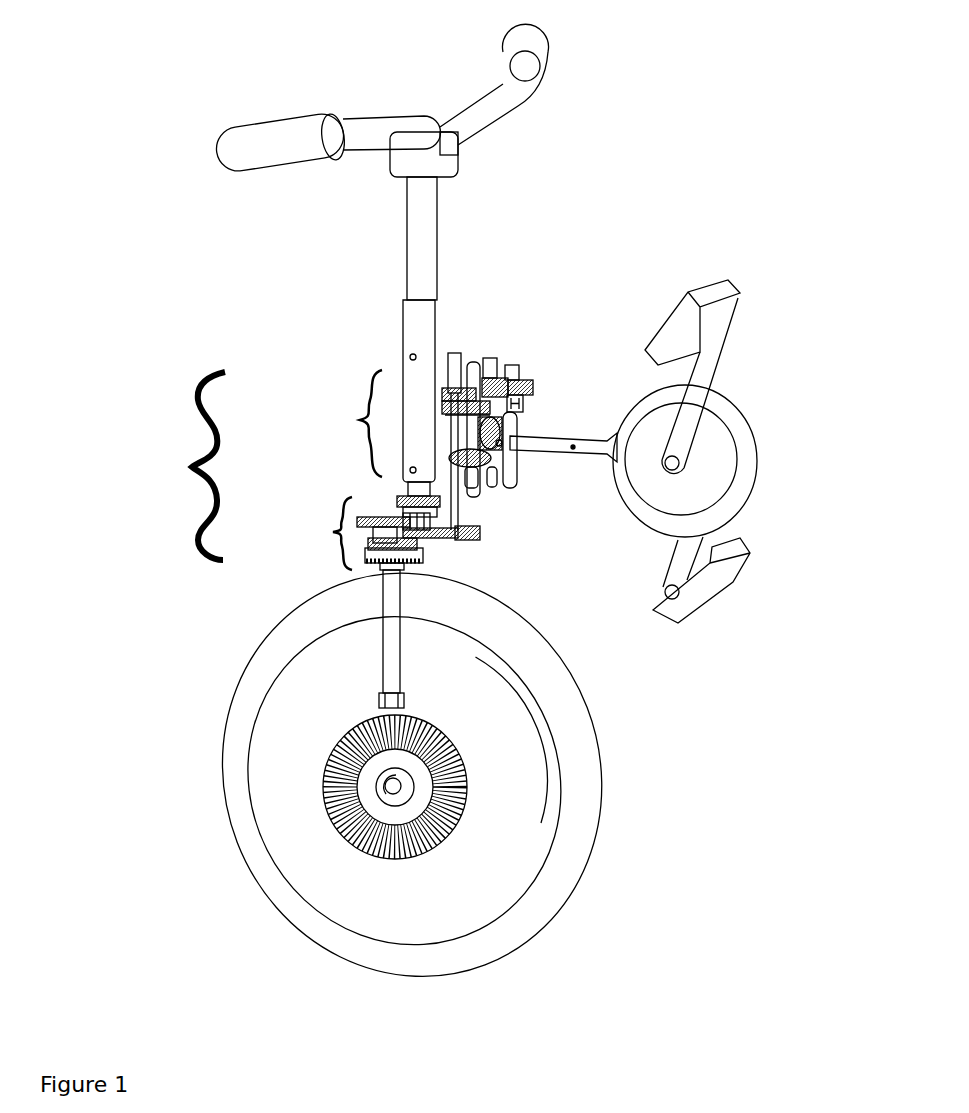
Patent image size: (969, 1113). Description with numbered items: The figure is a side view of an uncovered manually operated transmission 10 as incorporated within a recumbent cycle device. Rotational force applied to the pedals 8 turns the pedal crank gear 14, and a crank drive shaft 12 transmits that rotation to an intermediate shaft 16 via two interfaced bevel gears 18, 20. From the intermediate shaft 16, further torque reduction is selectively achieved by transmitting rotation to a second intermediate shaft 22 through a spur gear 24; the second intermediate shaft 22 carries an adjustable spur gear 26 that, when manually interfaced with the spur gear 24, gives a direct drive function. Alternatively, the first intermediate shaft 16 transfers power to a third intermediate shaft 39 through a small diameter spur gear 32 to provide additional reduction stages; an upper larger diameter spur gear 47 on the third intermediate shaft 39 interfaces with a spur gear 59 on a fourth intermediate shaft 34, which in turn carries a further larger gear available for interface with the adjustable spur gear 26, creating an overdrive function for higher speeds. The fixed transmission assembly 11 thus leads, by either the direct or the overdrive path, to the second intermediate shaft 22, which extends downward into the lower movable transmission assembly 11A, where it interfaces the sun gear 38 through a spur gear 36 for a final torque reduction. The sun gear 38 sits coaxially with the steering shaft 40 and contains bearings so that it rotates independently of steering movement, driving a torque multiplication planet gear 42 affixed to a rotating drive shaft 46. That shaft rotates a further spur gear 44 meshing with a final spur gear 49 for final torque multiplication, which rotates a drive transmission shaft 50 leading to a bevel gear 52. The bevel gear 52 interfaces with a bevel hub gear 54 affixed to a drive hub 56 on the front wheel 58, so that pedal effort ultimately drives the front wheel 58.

The pedals 8 is at (745, 288).
The transmission 10 is at (178, 466).
The fixed transmission assembly 11 is at (347, 423).
The lower movable transmission assembly 11A is at (316, 533).
The crank drive shaft 12 is at (575, 450).
The pedal crank gear 14 is at (760, 470).
The intermediate shaft 16 is at (480, 358).
The bevel gear 18 is at (480, 470).
The bevel gear 20 is at (493, 437).
The second intermediate shaft 22 is at (456, 349).
The spur gear 24 is at (443, 405).
The adjustable spur gear 26 is at (445, 390).
The small diameter spur gear 32 is at (525, 404).
The fourth intermediate shaft 34 is at (494, 355).
The spur gear 36 is at (470, 538).
The sun gear 38 is at (432, 538).
The third intermediate shaft 39 is at (512, 376).
The steering shaft 40 is at (410, 240).
The torque multiplication planet gear 42 is at (378, 525).
The spur gear 44 is at (372, 554).
The rotating drive shaft 46 is at (378, 512).
The upper larger diameter spur gear 47 is at (522, 388).
The final spur gear 49 is at (392, 568).
The drive transmission shaft 50 is at (393, 650).
The bevel gear 52 is at (365, 722).
The bevel hub gear 54 is at (330, 800).
The drive hub 56 is at (386, 790).
The front wheel 58 is at (572, 868).
The spur gear 59 is at (510, 362).